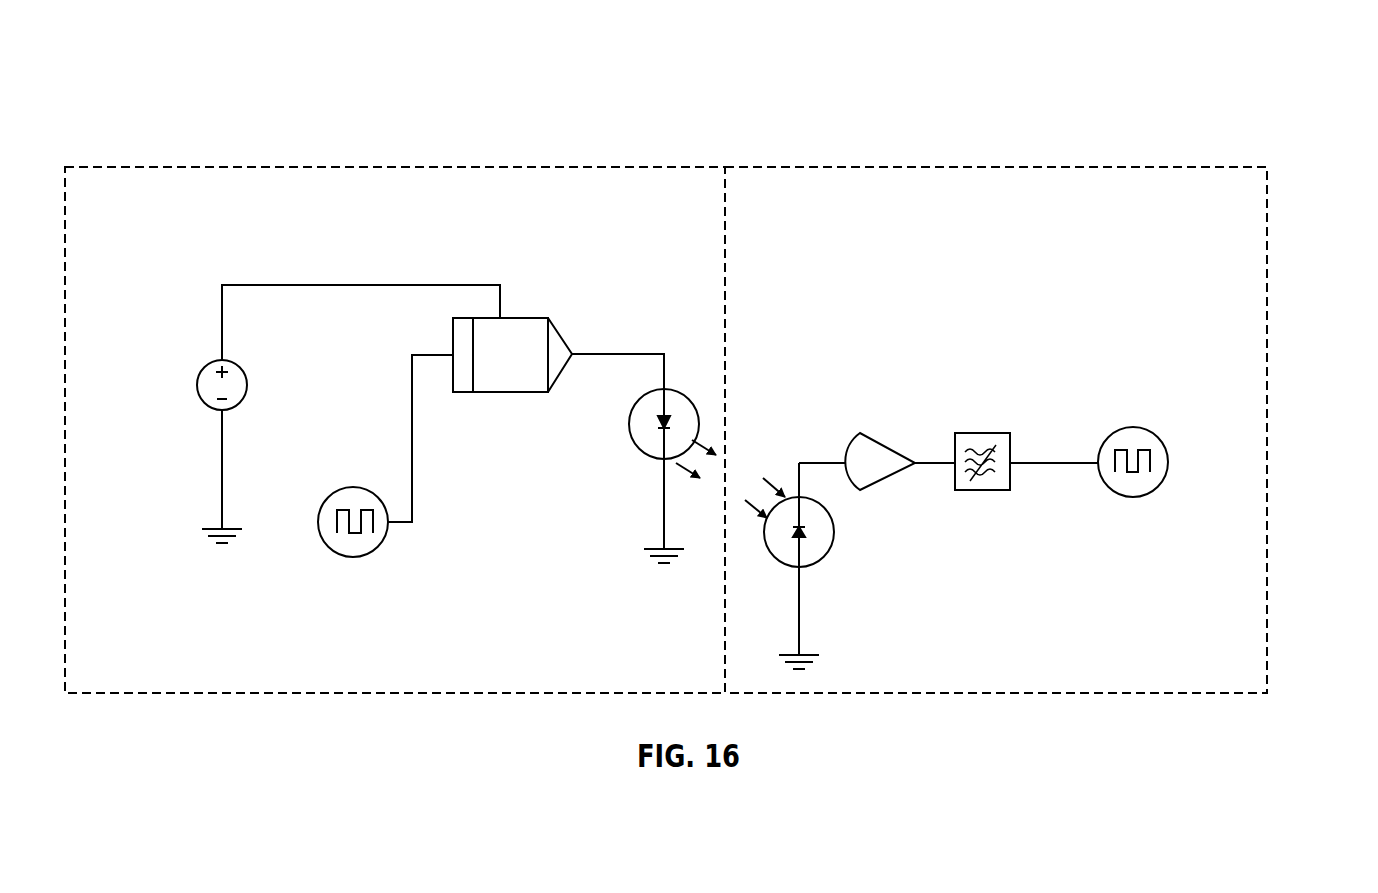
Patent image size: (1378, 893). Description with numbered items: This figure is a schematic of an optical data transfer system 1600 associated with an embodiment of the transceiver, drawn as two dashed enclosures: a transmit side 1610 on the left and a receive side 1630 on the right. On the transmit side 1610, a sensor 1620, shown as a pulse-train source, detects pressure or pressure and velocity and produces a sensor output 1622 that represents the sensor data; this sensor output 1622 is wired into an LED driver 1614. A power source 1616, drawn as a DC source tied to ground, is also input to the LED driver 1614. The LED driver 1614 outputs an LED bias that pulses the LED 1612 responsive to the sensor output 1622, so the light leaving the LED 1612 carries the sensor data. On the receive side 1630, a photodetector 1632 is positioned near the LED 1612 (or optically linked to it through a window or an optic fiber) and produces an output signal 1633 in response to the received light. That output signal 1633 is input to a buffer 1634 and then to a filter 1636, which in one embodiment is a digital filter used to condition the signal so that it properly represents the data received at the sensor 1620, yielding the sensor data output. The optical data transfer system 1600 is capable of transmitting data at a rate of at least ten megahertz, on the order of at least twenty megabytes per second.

The optical data transfer system 1600 is at (148, 60).
The transmit side 1610 is at (146, 167).
The LED 1612 is at (664, 410).
The LED driver 1614 is at (538, 322).
The power source 1616 is at (202, 372).
The sensor 1620 is at (353, 557).
The sensor output 1622 is at (412, 388).
The receive side 1630 is at (1268, 232).
The photodetector 1632 is at (834, 540).
The output signal 1633 is at (822, 462).
The buffer 1634 is at (865, 490).
The filter 1636 is at (970, 492).